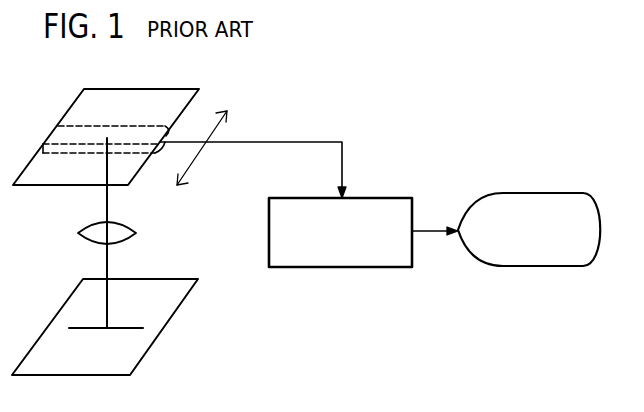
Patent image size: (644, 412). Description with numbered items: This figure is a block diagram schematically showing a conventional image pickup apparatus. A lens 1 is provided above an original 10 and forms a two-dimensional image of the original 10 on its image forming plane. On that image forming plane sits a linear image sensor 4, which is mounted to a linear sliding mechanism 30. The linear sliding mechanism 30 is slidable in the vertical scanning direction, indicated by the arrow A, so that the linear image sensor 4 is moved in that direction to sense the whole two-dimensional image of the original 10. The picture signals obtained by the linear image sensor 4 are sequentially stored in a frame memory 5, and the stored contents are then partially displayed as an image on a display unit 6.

The linear sliding mechanism 30 is at (165, 80).
The linear image sensor 4 is at (160, 148).
The arrow A is at (221, 118).
The lens 1 is at (128, 224).
The original 10 is at (160, 279).
The frame memory 5 is at (378, 198).
The display unit 6 is at (545, 193).